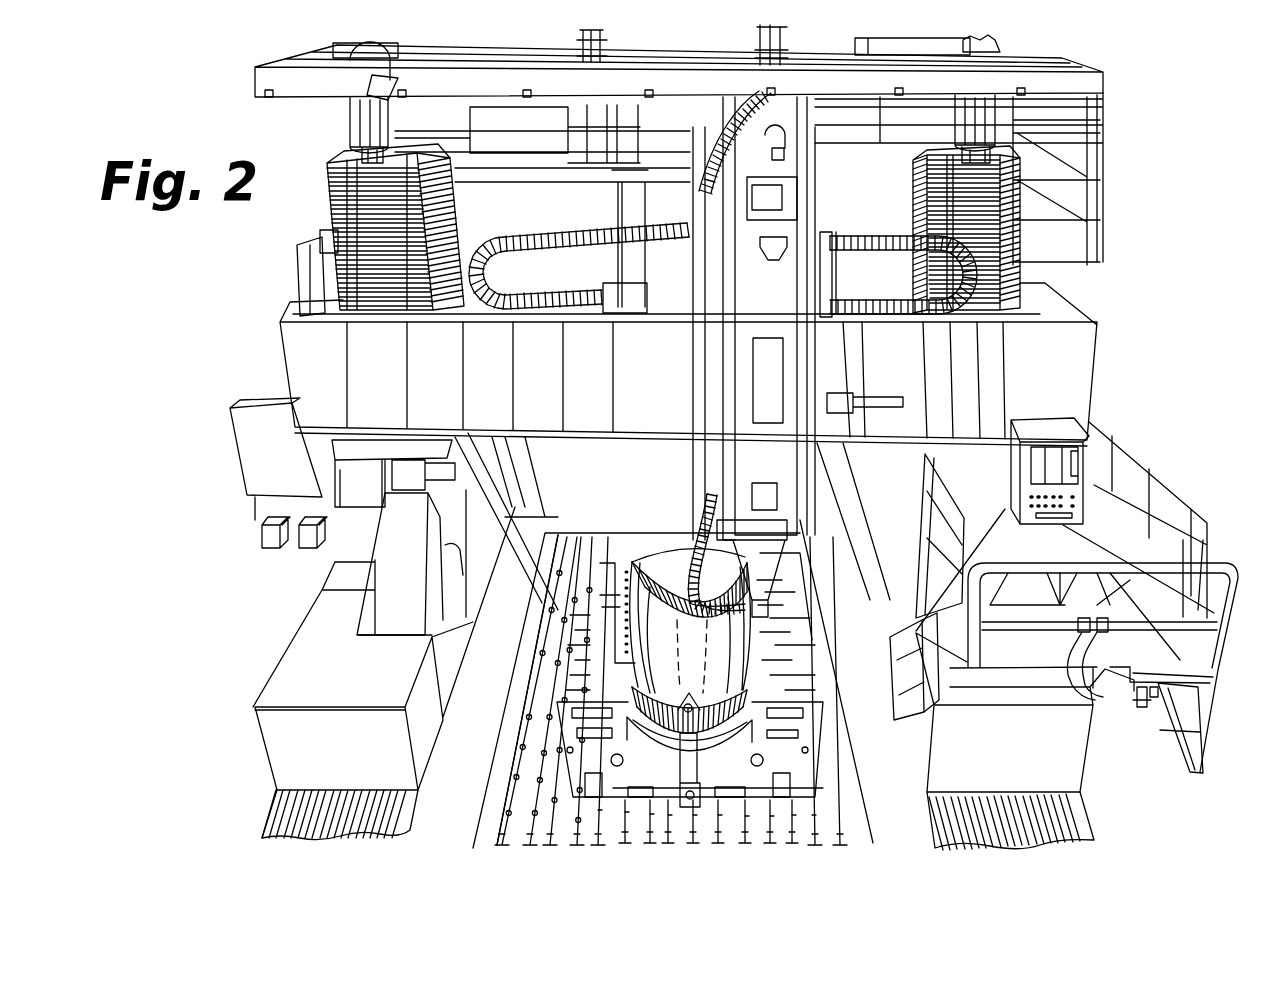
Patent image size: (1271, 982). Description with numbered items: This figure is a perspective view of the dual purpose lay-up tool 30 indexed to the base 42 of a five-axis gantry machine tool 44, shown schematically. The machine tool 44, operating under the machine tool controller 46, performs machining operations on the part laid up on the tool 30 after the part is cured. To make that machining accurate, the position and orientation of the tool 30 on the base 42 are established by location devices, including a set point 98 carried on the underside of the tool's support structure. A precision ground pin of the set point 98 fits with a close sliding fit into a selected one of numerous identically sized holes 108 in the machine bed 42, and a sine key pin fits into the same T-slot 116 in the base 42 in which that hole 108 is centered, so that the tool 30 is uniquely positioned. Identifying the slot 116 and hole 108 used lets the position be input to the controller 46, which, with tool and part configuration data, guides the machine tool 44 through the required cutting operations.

The five-axis gantry machine tool 44 is at (1129, 390).
The machine tool controller 46 is at (1083, 434).
The dual purpose lay-up tool 30 is at (617, 564).
The base 42 is at (474, 825).
The set point 98 is at (697, 822).
The holes 108 is at (531, 717).
The T-slot 116 is at (521, 760).